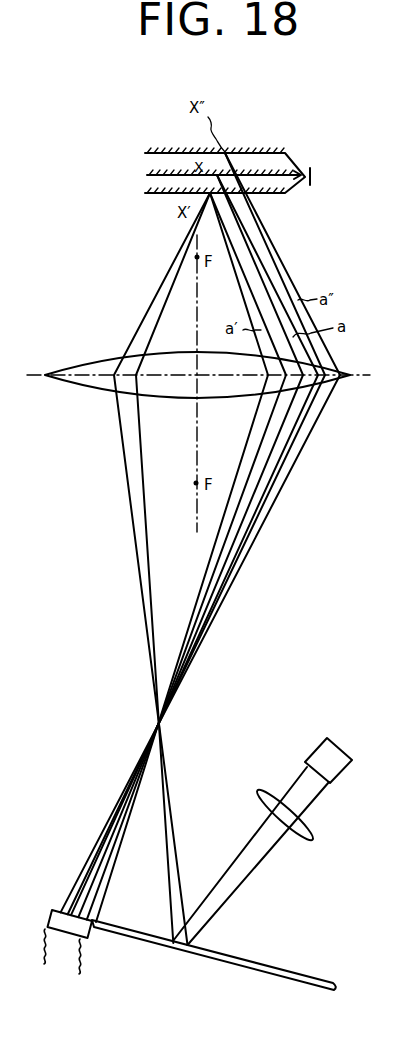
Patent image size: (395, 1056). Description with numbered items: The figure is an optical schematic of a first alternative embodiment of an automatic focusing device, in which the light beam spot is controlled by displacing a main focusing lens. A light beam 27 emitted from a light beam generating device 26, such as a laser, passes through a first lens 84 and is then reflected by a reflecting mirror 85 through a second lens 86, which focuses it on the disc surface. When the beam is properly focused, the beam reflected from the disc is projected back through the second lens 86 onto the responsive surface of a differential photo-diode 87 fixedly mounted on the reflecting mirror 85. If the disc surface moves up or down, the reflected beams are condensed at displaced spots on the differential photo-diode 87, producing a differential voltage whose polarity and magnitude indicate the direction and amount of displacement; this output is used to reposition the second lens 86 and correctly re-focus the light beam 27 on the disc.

The light beam generating device 26 is at (325, 752).
The light beam 27 is at (312, 800).
The first lens 84 is at (313, 841).
The reflecting mirror 85 is at (280, 958).
The second lens 86 is at (88, 391).
The differential photo-diode 87 is at (83, 933).